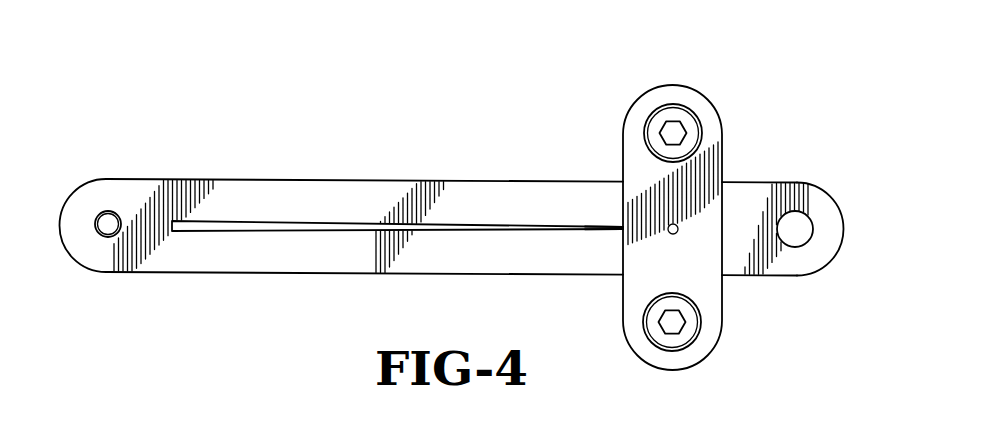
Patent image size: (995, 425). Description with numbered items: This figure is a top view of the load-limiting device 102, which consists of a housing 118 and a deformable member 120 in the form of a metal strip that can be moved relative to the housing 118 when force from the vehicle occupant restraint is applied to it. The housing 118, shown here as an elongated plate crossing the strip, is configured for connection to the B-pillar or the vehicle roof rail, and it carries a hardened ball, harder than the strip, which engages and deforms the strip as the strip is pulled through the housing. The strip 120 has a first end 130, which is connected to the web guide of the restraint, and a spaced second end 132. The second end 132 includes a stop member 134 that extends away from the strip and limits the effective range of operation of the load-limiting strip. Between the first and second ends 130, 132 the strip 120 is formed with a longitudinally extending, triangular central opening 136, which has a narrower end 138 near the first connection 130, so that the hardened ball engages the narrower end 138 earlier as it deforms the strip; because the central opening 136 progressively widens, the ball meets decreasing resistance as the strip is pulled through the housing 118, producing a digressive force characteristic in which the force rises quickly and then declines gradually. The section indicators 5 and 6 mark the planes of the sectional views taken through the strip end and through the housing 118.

The load-limiting device 102 is at (291, 104).
The housing 118 is at (617, 120).
The deformable member 120 is at (459, 175).
The first end 130 is at (805, 273).
The second end 132 is at (84, 270).
The stop member 134 is at (108, 216).
The triangular central opening 136 is at (230, 235).
The narrower end 138 is at (577, 233).
The section line 5- 5 is at (108, 224).
The section line 6- 6 is at (673, 131).